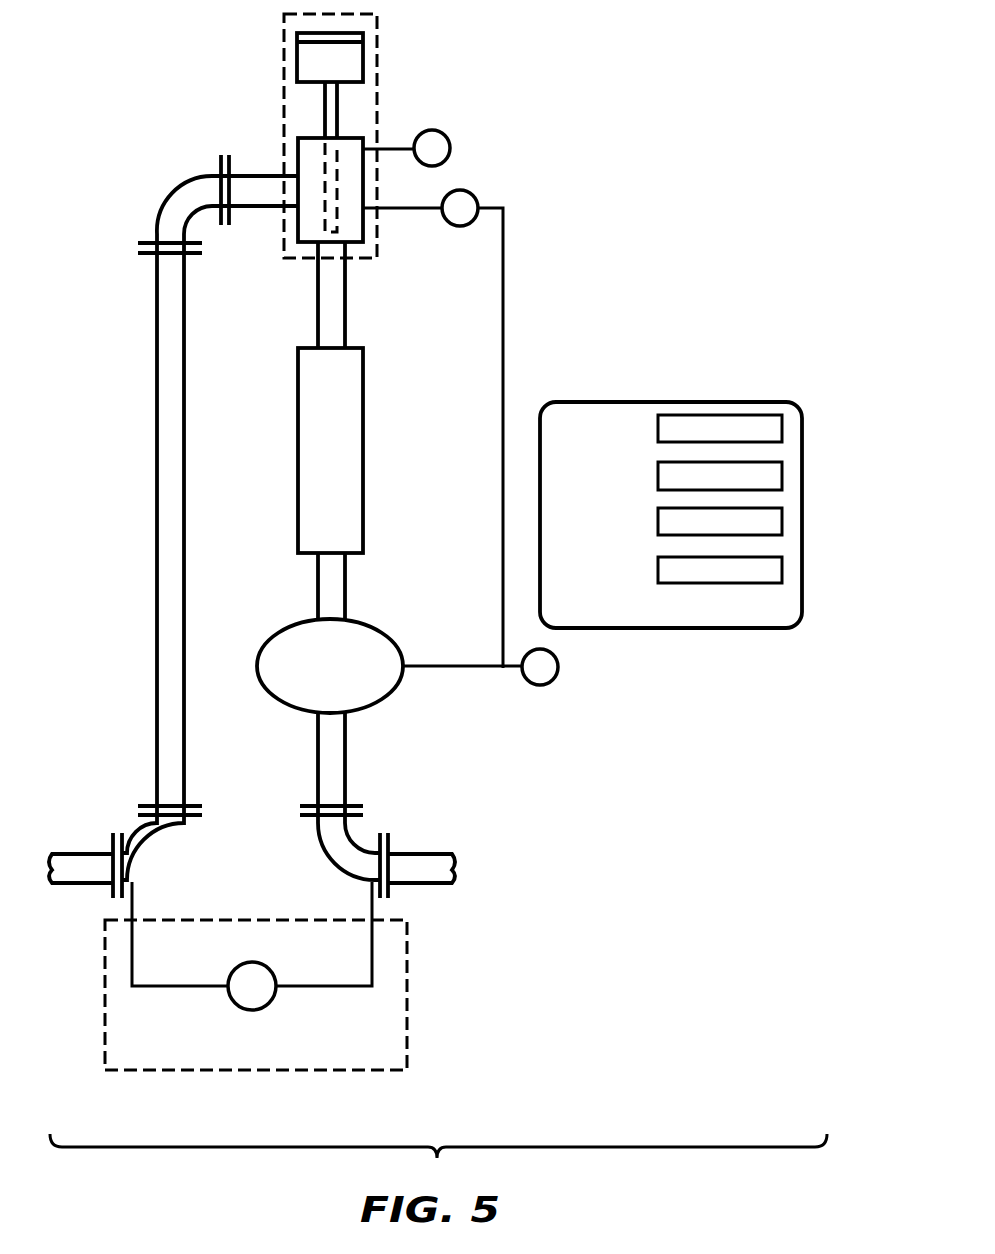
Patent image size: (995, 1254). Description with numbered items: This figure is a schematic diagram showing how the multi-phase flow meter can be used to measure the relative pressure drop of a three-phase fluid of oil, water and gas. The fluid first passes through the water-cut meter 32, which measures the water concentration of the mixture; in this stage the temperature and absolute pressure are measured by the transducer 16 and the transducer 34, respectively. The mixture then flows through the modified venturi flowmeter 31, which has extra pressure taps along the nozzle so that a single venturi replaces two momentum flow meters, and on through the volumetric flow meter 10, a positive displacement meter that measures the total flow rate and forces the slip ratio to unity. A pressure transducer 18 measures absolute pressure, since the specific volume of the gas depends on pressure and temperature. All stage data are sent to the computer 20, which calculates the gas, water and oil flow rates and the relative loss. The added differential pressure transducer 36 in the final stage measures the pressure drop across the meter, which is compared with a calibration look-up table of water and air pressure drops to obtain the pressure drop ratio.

The volumetric flow meter 10 is at (284, 698).
The temperature transducer 16 is at (444, 133).
The pressure transducer 18 is at (555, 678).
The computer 20 is at (561, 402).
The modified venturi flowmeter 31 is at (298, 518).
The water-cut meter 32 is at (377, 42).
The pressure transducer 34 is at (468, 190).
The differential pressure transducer 36 is at (268, 968).